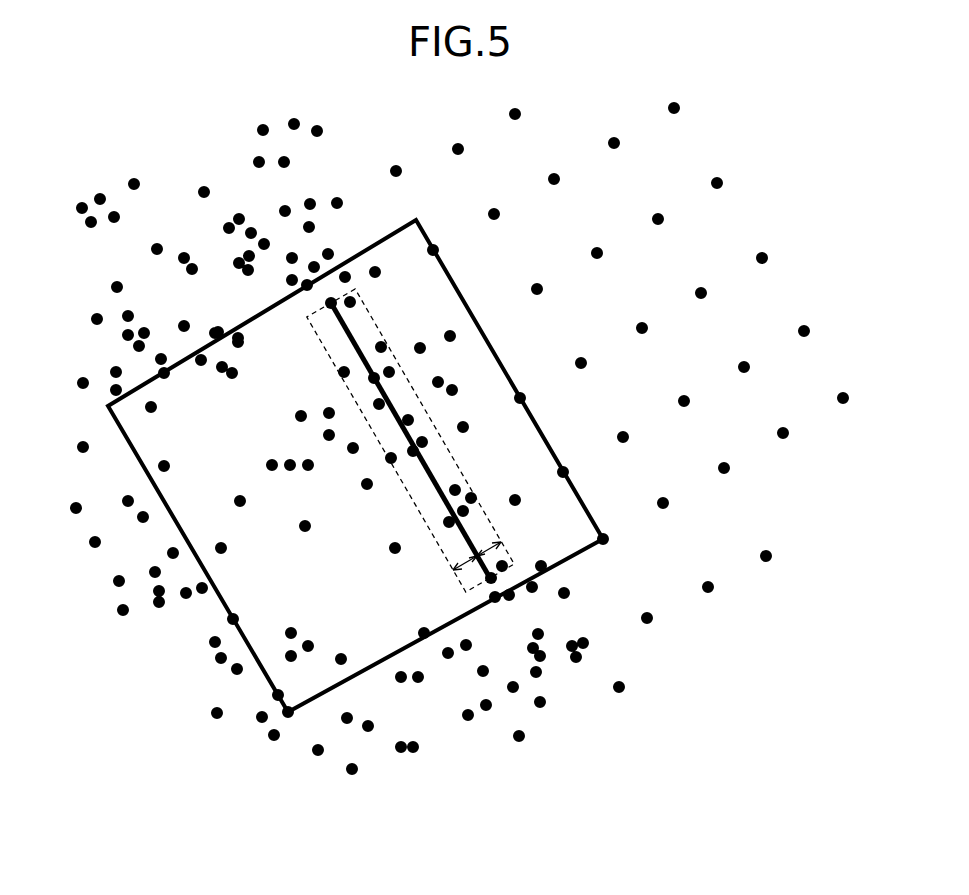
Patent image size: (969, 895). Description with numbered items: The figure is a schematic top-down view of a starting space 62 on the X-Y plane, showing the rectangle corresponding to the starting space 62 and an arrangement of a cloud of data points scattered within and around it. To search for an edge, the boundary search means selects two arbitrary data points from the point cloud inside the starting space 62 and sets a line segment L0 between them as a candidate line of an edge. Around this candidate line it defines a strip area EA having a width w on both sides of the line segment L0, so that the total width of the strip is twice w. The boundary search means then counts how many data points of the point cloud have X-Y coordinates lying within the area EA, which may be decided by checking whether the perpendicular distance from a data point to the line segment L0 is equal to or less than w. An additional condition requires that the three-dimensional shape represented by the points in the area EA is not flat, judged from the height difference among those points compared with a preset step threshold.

The starting space 62 is at (265, 680).
The strip area EA is at (406, 488).
The line segment L0 is at (432, 474).
The width w is at (460, 562).